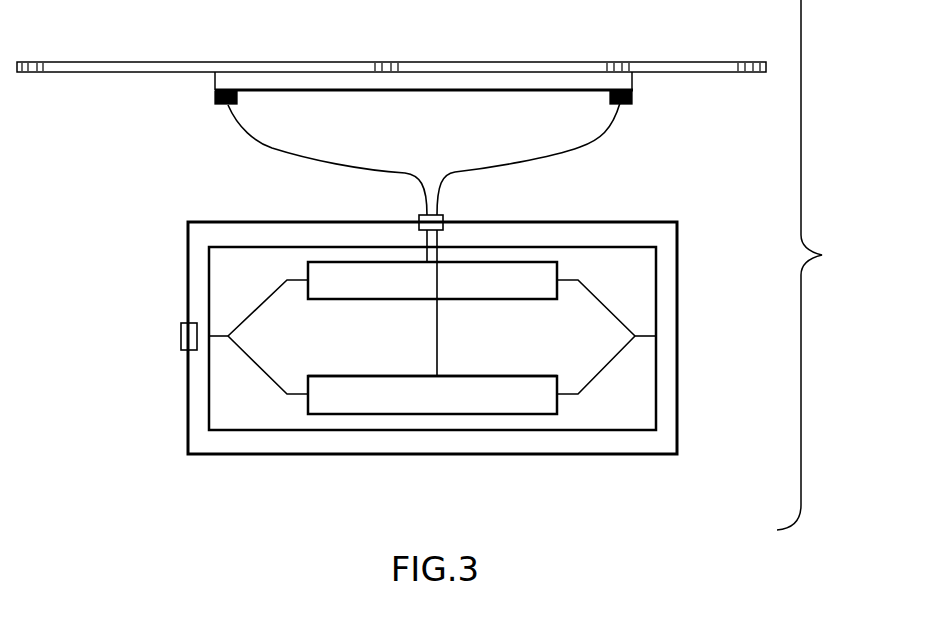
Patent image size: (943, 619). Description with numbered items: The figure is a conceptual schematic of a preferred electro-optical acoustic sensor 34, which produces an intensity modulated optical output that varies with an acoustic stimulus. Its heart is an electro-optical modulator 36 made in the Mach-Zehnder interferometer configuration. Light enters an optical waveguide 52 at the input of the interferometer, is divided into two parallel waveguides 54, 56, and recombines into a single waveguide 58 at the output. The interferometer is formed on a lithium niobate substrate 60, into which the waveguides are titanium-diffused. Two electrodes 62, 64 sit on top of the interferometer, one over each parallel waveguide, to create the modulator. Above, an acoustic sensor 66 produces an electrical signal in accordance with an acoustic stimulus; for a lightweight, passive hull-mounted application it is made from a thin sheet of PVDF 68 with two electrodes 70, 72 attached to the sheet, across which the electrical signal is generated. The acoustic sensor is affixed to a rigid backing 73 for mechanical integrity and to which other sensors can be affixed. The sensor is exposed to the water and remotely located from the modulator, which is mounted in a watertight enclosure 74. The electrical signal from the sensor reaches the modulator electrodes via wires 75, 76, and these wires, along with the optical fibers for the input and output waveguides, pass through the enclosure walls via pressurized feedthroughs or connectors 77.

The electro-optical acoustic sensor 34 is at (821, 265).
The electro-optical modulator 36 is at (225, 445).
The optical waveguide 52 is at (220, 328).
The parallel waveguide 54 is at (300, 280).
The parallel waveguide 56 is at (295, 397).
The single waveguide 58 is at (645, 337).
The lithium niobate substrate 60 is at (443, 423).
The electrode 62 is at (535, 273).
The electrode 64 is at (365, 395).
The acoustic sensor 66 is at (472, 118).
The thin sheet of PVDF 68 is at (262, 92).
The electrode 70 is at (215, 98).
The electrode 72 is at (633, 92).
The rigid backing 73 is at (718, 62).
The watertight enclosure 74 is at (677, 422).
The wire 75 is at (250, 138).
The wire 76 is at (597, 138).
The pressurized feedthroughs or connectors 77 is at (437, 200).